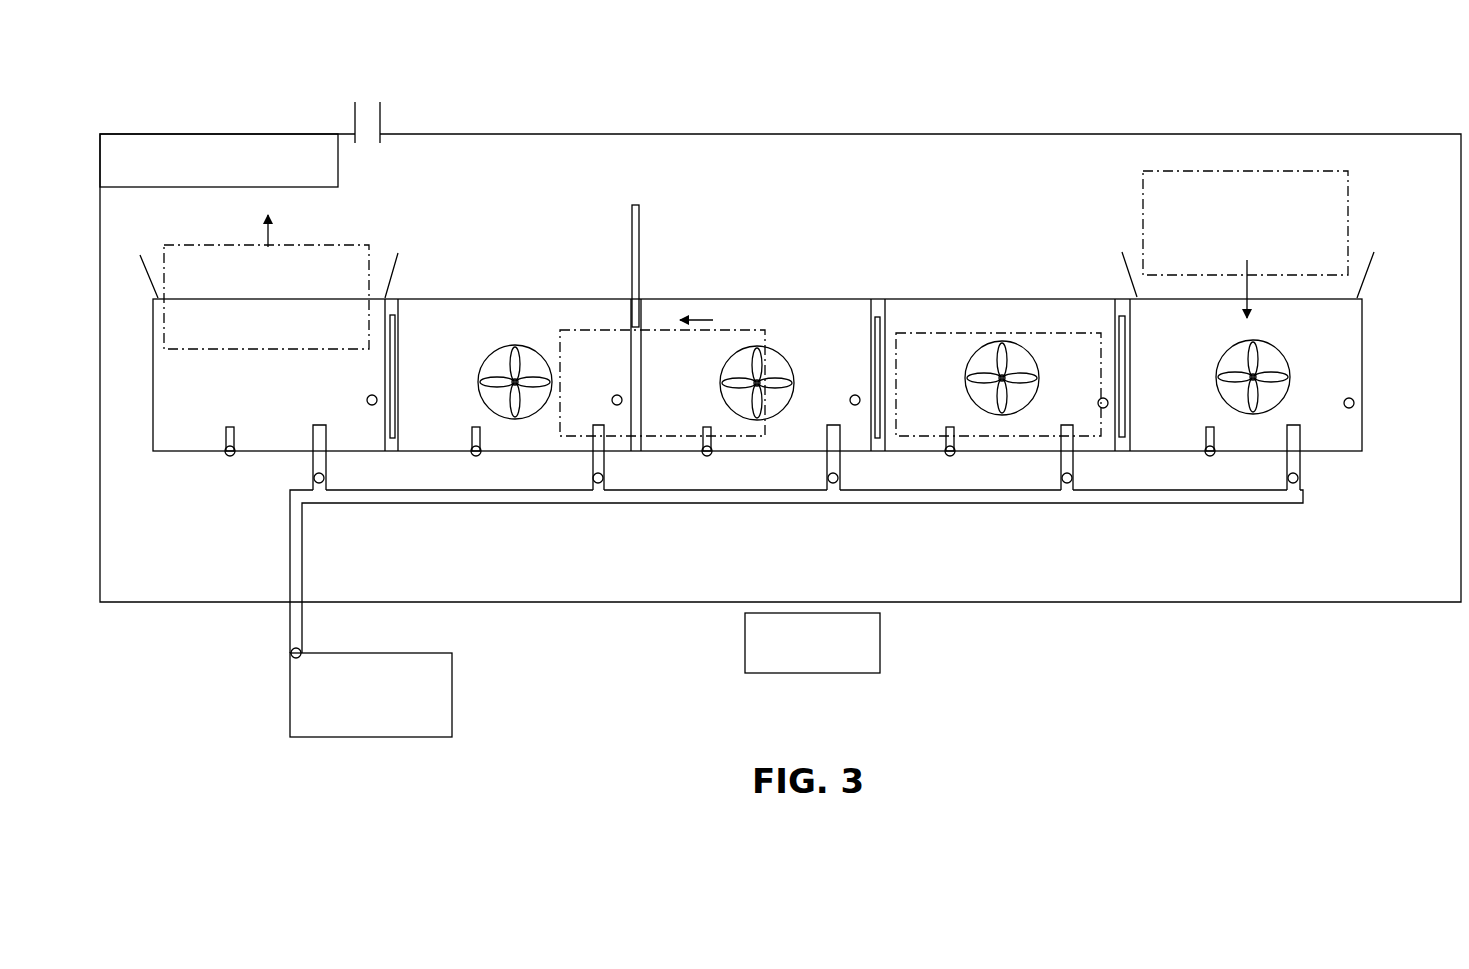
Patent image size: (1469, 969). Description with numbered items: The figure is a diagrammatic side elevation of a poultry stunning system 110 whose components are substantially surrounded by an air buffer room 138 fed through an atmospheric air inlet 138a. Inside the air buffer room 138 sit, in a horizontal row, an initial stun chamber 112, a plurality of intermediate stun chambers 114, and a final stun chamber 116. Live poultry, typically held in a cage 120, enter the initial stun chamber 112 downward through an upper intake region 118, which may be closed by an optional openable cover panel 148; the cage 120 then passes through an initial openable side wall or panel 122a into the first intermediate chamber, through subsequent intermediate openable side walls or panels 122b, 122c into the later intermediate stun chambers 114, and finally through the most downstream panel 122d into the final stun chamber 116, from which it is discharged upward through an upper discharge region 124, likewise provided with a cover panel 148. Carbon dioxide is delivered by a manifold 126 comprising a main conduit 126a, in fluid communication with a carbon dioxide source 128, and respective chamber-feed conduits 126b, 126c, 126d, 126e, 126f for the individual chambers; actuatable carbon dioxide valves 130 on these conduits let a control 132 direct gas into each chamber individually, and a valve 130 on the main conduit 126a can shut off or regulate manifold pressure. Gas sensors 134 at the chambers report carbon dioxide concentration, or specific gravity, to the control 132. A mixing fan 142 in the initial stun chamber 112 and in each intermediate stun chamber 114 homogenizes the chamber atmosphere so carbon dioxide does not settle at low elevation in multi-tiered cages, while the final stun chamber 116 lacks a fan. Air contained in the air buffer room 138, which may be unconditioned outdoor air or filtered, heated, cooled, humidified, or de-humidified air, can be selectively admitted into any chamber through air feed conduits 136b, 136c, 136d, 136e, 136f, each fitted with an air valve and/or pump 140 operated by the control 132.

The poultry stunning system 110 is at (852, 58).
The initial stun chamber 112 is at (1183, 331).
The intermediate stun chambers 114 is at (540, 331).
The final stun chamber 116 is at (258, 342).
The upper intake region 118 is at (1220, 294).
The cage 120 is at (215, 246).
The initial openable side wall or panel 122a is at (1130, 366).
The intermediate openable side wall or panel 122b is at (878, 302).
The intermediate openable side wall or panel 122c is at (641, 258).
The most downstream intermediate openable side wall or panel 122d is at (390, 342).
The upper discharge region 124 is at (270, 296).
The carbon dioxide manifold 126 is at (670, 525).
The main conduit 126a is at (290, 542).
The chamber-feed conduit 126b is at (1294, 425).
The chamber-feed conduit 126c is at (1067, 425).
The chamber-feed conduit 126d is at (834, 425).
The chamber-feed conduit 126e is at (598, 425).
The chamber-feed conduit 126f is at (318, 425).
The carbon dioxide source 128 is at (452, 695).
The actuatable carbon dioxide valves 130 is at (320, 483).
The control 132 is at (745, 640).
The gas sensors 134 is at (374, 405).
The air feed conduit 136b is at (1208, 427).
The air feed conduit 136c is at (948, 427).
The air feed conduit 136d is at (705, 427).
The air feed conduit 136e is at (473, 427).
The air feed conduit 136f is at (230, 427).
The air buffer room 138 is at (588, 134).
The atmospheric air inlet 138a is at (368, 100).
The air valve and/or pump 140 is at (226, 450).
The mixing fan 142 is at (488, 358).
The openable cover panels 148 is at (160, 292).